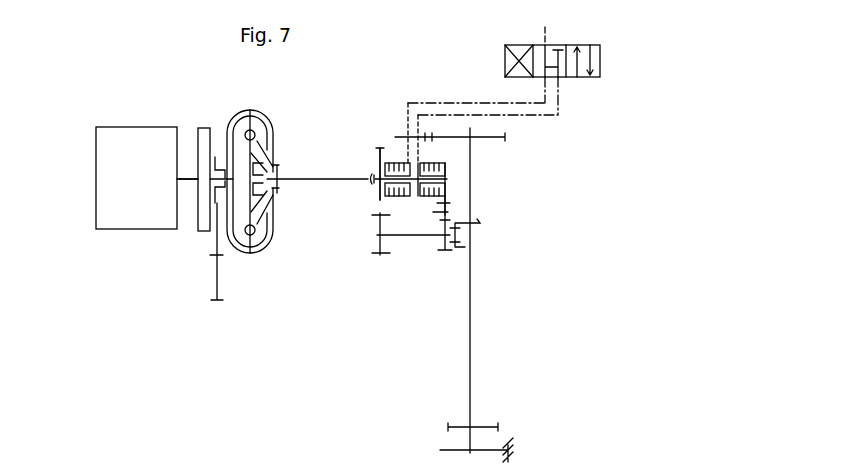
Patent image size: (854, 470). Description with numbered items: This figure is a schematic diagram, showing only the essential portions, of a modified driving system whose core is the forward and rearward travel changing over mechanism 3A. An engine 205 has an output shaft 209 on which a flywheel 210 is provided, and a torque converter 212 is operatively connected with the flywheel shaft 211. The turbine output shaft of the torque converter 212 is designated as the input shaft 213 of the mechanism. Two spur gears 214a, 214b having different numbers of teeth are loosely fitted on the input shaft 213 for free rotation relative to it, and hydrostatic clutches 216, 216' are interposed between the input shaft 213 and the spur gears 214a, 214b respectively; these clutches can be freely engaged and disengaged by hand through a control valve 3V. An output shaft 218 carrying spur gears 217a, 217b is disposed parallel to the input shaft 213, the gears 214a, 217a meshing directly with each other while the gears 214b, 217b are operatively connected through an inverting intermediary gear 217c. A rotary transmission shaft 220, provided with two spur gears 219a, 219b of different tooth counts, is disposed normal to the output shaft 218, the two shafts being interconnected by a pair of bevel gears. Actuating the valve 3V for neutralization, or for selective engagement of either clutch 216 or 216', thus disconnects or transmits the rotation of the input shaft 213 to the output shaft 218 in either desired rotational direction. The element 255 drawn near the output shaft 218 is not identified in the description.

The engine 205 is at (98, 202).
The output shaft of engine 209 is at (193, 182).
The flywheel 210 is at (202, 222).
The flywheel shaft 211 is at (224, 188).
The torque converter 212 is at (278, 250).
The input shaft 213 is at (333, 182).
The spur gear 214a is at (383, 202).
The spur gear 214b is at (445, 188).
The hydrostatic clutch 216 is at (458, 135).
The hydrostatic clutch 216' is at (488, 120).
The spur gear 217a is at (378, 222).
The spur gear 217b is at (450, 250).
The inverting intermediary gear 217c is at (447, 205).
The output shaft 218 is at (423, 236).
The spur gear 219a is at (497, 136).
The spur gear 219b is at (487, 427).
The rotary transmission shaft 220 is at (472, 373).
The coupling 255 is at (480, 224).
The control valve 3V is at (600, 70).
The forward and rearward travel changing over mechanism 3A is at (522, 165).